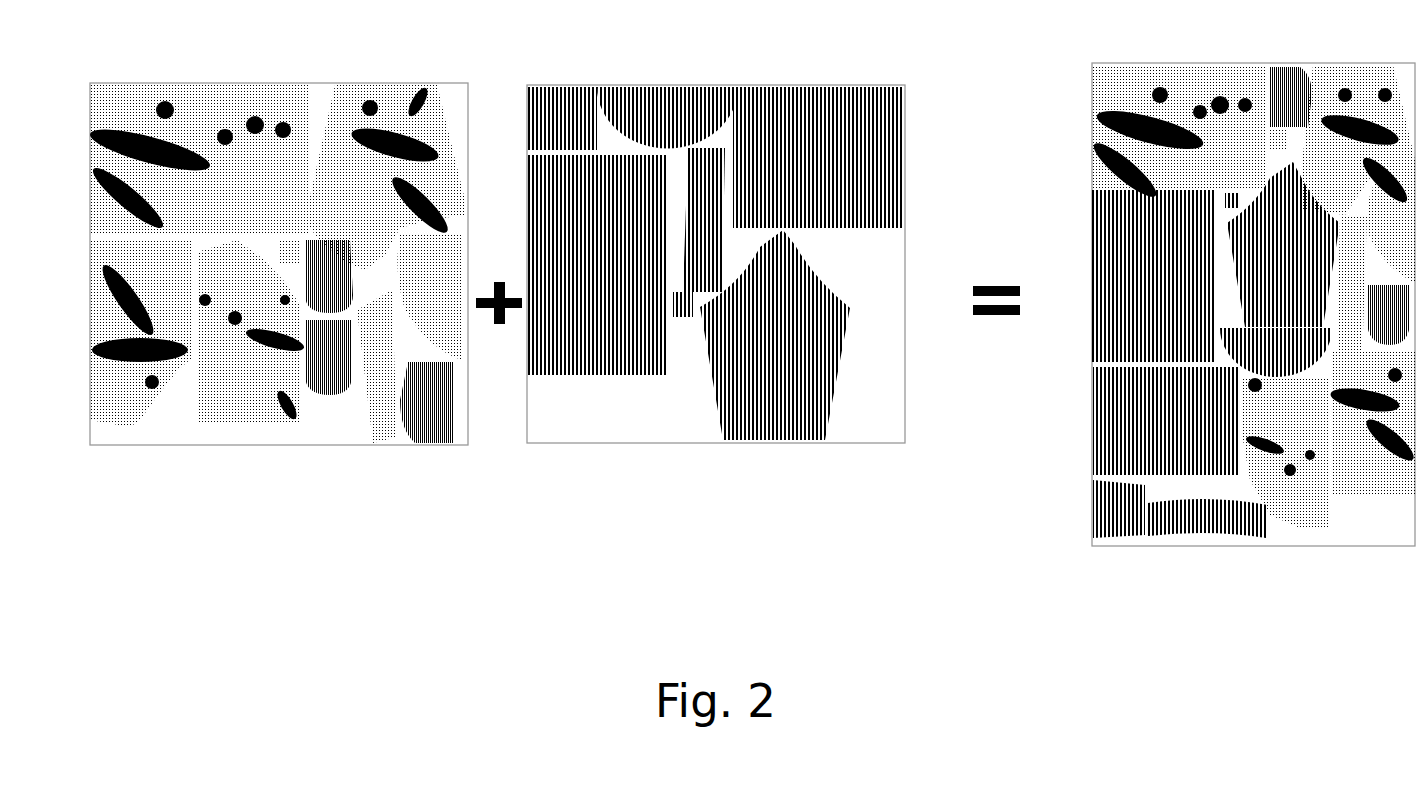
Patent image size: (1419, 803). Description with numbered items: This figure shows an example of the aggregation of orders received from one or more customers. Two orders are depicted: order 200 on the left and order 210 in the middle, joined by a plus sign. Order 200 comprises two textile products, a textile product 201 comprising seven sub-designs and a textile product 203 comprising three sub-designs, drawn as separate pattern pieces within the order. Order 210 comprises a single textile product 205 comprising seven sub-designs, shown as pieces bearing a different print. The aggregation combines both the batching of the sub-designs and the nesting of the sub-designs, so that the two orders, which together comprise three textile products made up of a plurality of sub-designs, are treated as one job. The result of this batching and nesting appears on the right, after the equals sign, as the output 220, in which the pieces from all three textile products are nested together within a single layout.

The order 200 is at (304, 36).
The textile product 201 is at (156, 374).
The textile product 203 is at (347, 273).
The order 210 is at (738, 36).
The textile product 205 is at (597, 372).
The output of the batching and nesting 220 is at (1297, 36).